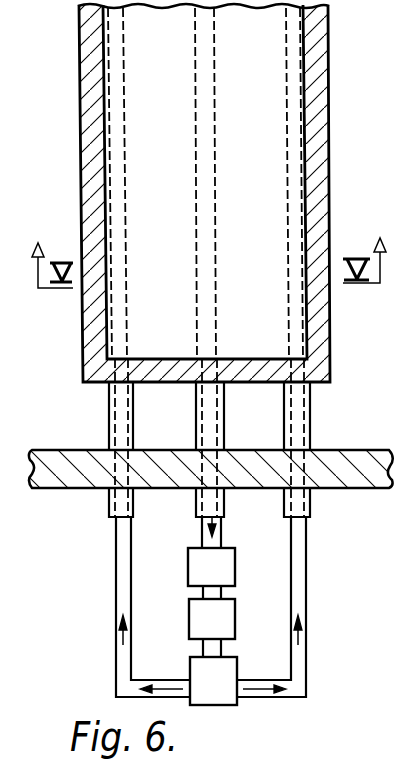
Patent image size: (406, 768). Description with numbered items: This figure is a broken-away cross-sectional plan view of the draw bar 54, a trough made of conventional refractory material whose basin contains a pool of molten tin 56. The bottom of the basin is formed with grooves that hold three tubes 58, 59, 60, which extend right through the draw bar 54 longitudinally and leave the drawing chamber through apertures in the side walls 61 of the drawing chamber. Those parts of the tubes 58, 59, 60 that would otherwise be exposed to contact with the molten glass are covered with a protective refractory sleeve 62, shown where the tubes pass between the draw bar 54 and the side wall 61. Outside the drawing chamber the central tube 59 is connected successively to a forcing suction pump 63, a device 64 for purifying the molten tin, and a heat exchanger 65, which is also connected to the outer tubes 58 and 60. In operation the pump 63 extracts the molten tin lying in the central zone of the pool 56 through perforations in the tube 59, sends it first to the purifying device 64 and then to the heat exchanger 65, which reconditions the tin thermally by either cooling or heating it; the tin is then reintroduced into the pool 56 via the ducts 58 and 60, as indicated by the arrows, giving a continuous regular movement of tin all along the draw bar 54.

The draw bar 54 is at (336, 75).
The pool of molten tin 56 is at (263, 214).
The tube 58 is at (118, 76).
The tube 59 is at (202, 78).
The tube 60 is at (294, 155).
The side wall of the drawing chamber 61 is at (358, 450).
The protective refractory sleeve 62 is at (134, 417).
The forcing suction pump 63 is at (211, 573).
The device for purifying the molten tin 64 is at (212, 628).
The heat exchanger 65 is at (213, 681).